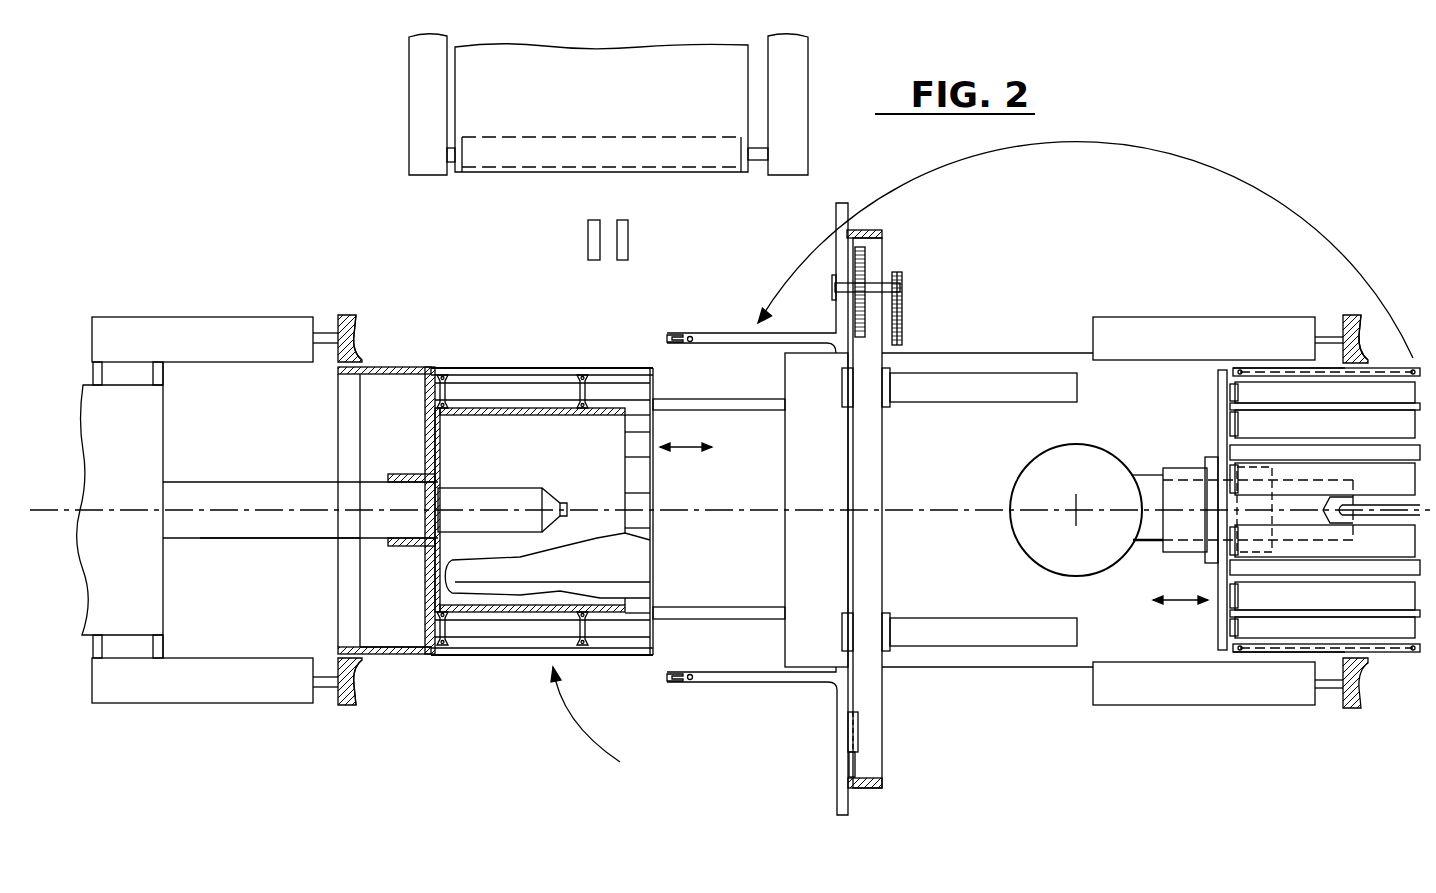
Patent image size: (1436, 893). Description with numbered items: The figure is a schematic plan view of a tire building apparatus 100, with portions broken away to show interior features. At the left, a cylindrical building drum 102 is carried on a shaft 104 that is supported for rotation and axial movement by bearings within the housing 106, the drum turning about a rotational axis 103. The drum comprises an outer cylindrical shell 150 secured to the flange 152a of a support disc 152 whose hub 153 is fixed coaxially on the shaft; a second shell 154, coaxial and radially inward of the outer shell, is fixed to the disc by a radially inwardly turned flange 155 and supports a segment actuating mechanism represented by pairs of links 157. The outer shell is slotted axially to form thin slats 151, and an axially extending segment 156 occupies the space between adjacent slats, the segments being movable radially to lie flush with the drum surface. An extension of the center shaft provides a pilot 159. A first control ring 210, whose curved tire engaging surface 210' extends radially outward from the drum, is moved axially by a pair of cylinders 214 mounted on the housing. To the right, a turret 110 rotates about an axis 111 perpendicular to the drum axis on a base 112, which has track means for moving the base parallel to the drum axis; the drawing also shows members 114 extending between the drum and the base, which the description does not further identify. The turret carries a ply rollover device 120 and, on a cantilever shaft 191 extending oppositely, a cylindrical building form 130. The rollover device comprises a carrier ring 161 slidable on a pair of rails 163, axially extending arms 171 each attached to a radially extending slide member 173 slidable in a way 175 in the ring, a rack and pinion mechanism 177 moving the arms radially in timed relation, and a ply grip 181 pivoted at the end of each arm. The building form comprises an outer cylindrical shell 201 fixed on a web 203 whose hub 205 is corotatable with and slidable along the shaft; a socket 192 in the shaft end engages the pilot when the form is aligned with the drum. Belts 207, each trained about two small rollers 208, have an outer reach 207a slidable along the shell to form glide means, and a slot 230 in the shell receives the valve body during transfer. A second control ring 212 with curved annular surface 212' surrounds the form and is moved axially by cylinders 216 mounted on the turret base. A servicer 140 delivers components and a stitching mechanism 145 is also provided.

The apparatus 100 is at (587, 725).
The cylindrical building drum 102 is at (520, 368).
The rotational axis 103 is at (230, 512).
The shaft 104 is at (237, 488).
The housing 106 is at (140, 462).
The turret 110 is at (1035, 525).
The axis 111 is at (1073, 506).
The base 112 is at (935, 455).
The guide rods 114 is at (720, 399).
The ply rollover device 120 is at (888, 701).
The cylindrical building form 130 is at (1282, 486).
The servicer 140 is at (626, 98).
The stitching mechanism 145 is at (592, 243).
The outer cylindrical shell 150 is at (395, 368).
The slats 151 is at (645, 445).
The support disc 152 is at (425, 424).
The flange 152a is at (408, 650).
The hub 153 is at (393, 477).
The second shell 154 is at (553, 415).
The radially inwardly turned flange 155 is at (440, 450).
The segment 156 is at (478, 372).
The pairs of links 157 is at (455, 380).
The pilot 159 is at (556, 498).
The ring 161 is at (882, 790).
The rails 163 is at (995, 388).
The arms 171 is at (728, 340).
The slide member 173 is at (845, 718).
The way 175 is at (848, 764).
The rack and pinion mechanism 177 is at (868, 280).
The ply grip 181 is at (680, 336).
The cantilever shaft 191 is at (1148, 537).
The socket 192 is at (1350, 481).
The outer cylindrical shell 201 is at (1265, 452).
The web 203 is at (1222, 442).
The hub 205 is at (1210, 560).
The belts 207 is at (1250, 390).
The outer reach 207a is at (1268, 368).
The rollers 208 is at (1222, 376).
The control ring 210 is at (324, 516).
The tire engaging surface 210' is at (388, 516).
The second control ring 212 is at (1346, 512).
The annular surface 212' is at (1383, 303).
The cylinders 214 is at (192, 346).
The cylinders 216 is at (1148, 337).
The slot 230 is at (1395, 512).